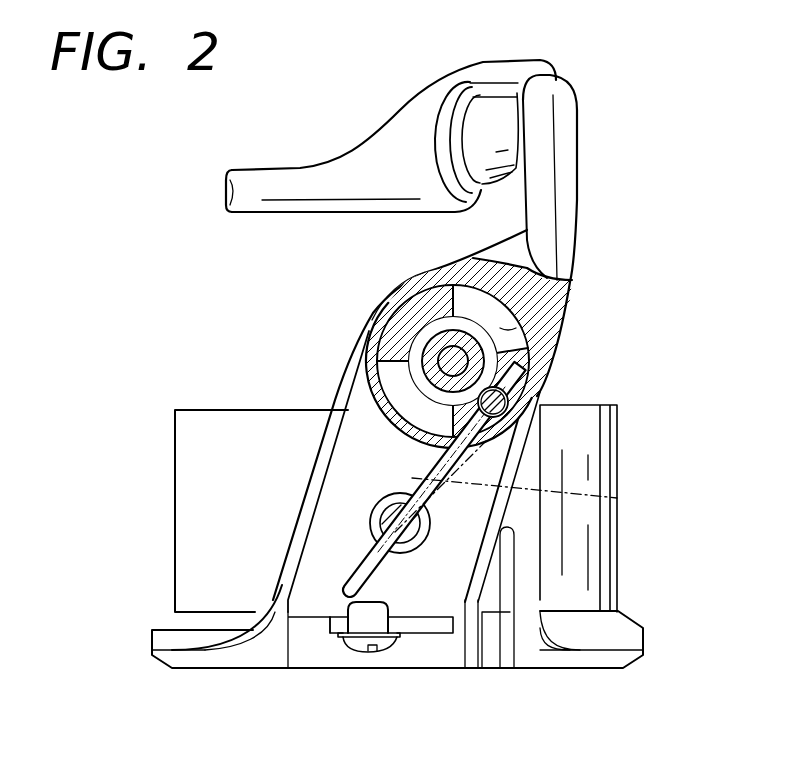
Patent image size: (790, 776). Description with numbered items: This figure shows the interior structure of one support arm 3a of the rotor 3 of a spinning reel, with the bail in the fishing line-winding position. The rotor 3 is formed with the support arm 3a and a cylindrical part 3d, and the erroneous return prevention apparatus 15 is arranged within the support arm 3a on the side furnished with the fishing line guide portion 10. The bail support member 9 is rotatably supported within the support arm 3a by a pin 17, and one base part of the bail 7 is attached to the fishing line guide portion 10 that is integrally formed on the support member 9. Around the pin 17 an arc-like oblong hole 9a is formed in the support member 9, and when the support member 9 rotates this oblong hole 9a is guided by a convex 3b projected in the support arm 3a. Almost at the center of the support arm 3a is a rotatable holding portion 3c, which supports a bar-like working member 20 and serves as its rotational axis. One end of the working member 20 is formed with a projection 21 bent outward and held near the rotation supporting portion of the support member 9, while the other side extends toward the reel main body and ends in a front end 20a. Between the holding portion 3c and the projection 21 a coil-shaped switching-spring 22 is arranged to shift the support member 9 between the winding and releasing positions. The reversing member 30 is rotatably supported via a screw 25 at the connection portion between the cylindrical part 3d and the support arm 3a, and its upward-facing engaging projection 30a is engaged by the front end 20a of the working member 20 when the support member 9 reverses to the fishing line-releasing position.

The rotor 3 is at (190, 445).
The support arm 3a is at (343, 405).
The convex 3b is at (405, 308).
The holding portion 3c is at (372, 513).
The cylindrical part 3d is at (228, 420).
The bail 7 is at (308, 172).
The bail support member 9 is at (547, 312).
The oblong hole 9a is at (490, 298).
The fishing line guide portion 10 is at (503, 113).
The erroneous return prevention apparatus 15 is at (618, 318).
The pin 17 is at (460, 366).
The working member 20 is at (385, 553).
The front end 20a is at (346, 596).
The projection 21 is at (504, 410).
The switching-spring 22 is at (617, 498).
The screw 25 is at (380, 650).
The reversing member 30 is at (440, 625).
The engaging projection 30a is at (362, 618).